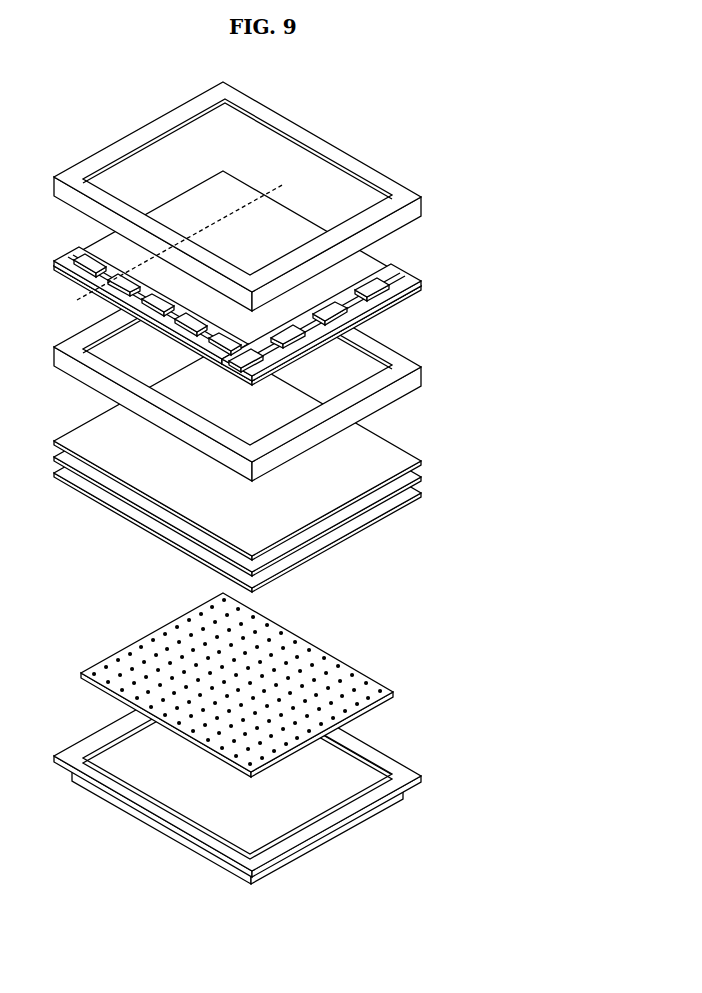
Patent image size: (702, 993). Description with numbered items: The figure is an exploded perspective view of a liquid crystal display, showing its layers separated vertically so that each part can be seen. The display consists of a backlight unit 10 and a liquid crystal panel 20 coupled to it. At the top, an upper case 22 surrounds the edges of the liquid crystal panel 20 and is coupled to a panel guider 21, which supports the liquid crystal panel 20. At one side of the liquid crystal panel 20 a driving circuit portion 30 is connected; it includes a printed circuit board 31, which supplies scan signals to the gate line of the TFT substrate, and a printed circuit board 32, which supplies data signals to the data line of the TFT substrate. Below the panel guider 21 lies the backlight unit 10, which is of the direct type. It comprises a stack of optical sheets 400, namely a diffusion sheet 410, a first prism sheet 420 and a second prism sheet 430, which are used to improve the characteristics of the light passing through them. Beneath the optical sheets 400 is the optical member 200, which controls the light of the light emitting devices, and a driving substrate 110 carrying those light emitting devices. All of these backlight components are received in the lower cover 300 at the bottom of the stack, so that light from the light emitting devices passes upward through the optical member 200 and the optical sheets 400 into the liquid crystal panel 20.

The backlight unit 10 is at (575, 453).
The liquid crystal panel 20 is at (267, 281).
The panel guider 21 is at (423, 370).
The upper case 22 is at (425, 200).
The driving circuit portion 30 is at (267, 308).
The printed circuit board 31 is at (404, 270).
The printed circuit board 32 is at (64, 263).
The driving substrate 110 is at (113, 668).
The optical member 200 is at (206, 685).
The lower cover 300 is at (402, 749).
The optical sheets 400 is at (312, 469).
The diffusion sheet 410 is at (428, 495).
The first prism sheet 420 is at (428, 479).
The second prism sheet 430 is at (428, 463).